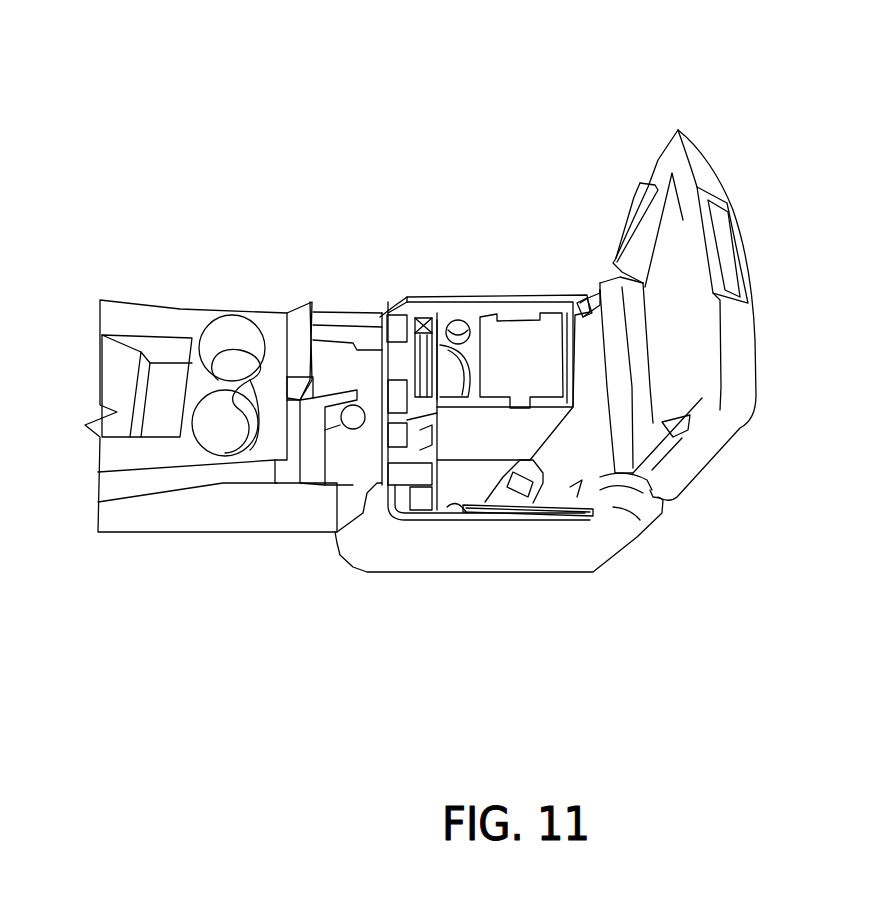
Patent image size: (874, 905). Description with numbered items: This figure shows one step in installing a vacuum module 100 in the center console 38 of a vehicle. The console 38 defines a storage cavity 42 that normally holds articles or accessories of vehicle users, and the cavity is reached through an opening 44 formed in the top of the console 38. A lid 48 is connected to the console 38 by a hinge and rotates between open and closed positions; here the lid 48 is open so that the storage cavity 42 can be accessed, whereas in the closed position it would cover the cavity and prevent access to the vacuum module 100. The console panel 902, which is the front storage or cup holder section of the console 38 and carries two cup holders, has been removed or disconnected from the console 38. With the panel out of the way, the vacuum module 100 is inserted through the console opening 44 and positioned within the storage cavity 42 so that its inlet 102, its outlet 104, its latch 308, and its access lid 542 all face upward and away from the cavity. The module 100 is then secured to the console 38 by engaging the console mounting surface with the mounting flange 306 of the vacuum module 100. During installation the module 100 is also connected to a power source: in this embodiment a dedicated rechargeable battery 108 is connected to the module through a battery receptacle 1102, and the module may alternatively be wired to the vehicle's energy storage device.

The center console 38 is at (642, 140).
The console panel 902 is at (168, 328).
The mounting flange 306 is at (356, 317).
The rechargeable battery 108 is at (320, 465).
The vacuum module 100 is at (395, 292).
The outlet 104 is at (422, 318).
The latch 308 is at (441, 320).
The inlet 102 is at (457, 320).
The access lid 542 is at (512, 330).
The opening 44 is at (450, 505).
The battery receptacle 1102 is at (502, 508).
The storage cavity 42 is at (593, 513).
The lid 48 is at (720, 428).